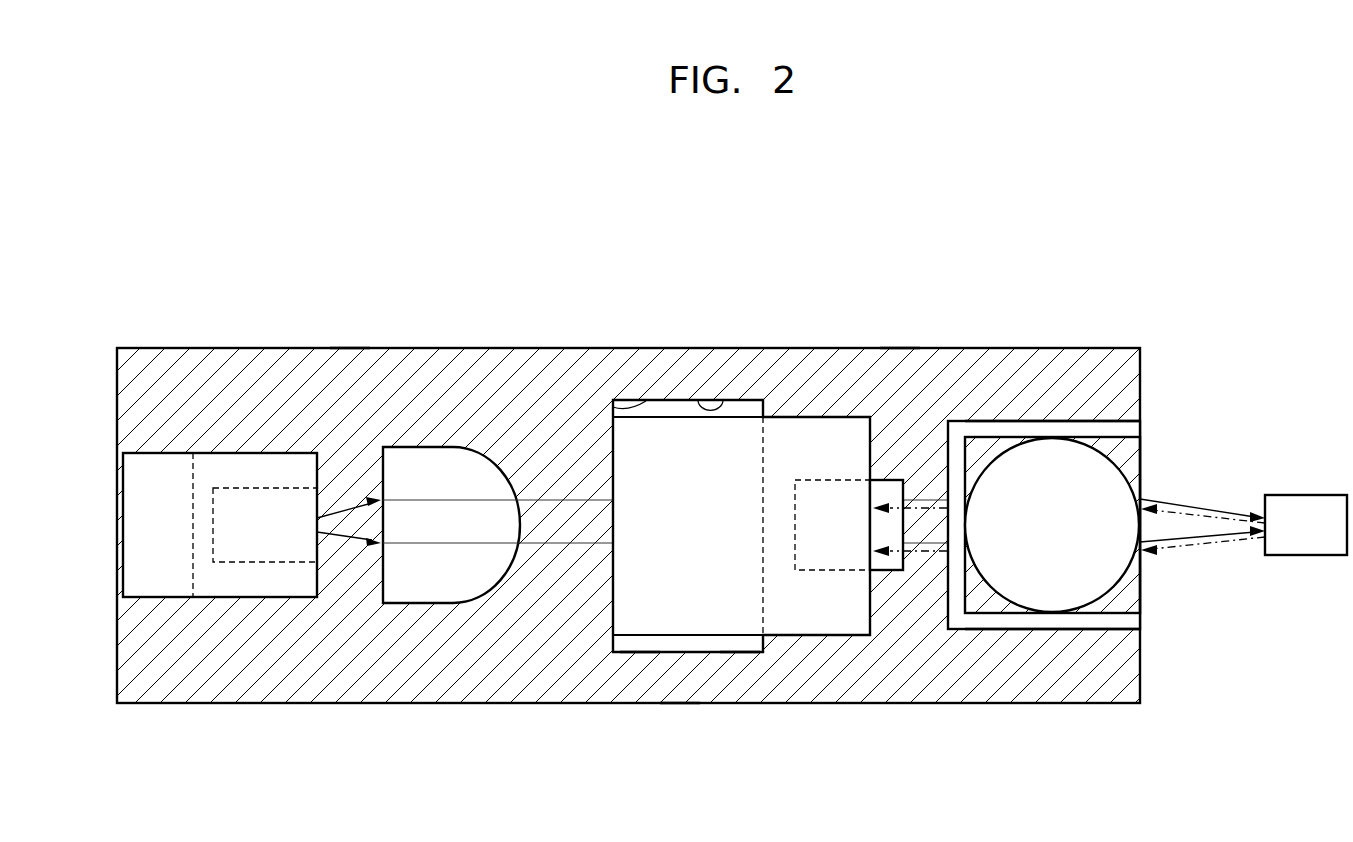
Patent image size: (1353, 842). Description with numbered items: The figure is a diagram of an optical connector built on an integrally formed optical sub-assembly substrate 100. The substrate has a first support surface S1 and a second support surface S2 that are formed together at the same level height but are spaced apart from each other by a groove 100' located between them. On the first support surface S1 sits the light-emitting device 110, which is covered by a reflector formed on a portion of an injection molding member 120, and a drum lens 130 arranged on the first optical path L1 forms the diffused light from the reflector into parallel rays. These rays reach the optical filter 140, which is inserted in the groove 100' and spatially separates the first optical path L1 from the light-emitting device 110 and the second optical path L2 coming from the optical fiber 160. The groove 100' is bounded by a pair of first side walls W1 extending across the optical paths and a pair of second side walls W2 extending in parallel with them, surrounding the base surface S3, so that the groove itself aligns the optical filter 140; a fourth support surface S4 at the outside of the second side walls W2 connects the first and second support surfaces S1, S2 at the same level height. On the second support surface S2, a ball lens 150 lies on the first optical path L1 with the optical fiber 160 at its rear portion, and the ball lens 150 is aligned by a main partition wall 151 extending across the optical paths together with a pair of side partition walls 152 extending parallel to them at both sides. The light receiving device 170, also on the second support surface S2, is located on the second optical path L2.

The optical sub-assembly (OSA) substrate 100 is at (628, 474).
The groove 100' is at (735, 701).
The light-emitting device 110 is at (267, 562).
The injection molding member 120 is at (252, 525).
The drum lens 130 is at (436, 465).
The optical filter 140 is at (741, 525).
The ball lens 150 is at (1050, 447).
The main partition wall 151 is at (1039, 525).
The side partition walls 152 is at (1112, 428).
The optical fiber 160 is at (1308, 495).
The light receiving device 170 is at (882, 562).
The first support surface S1 is at (352, 352).
The second support surface S2 is at (901, 362).
The base surface S3 is at (630, 652).
The fourth support surface S4 is at (680, 692).
The first side walls W1 is at (645, 395).
The second side walls W2 is at (720, 402).
The first optical path L1 is at (575, 502).
The second optical path L2 is at (1227, 523).